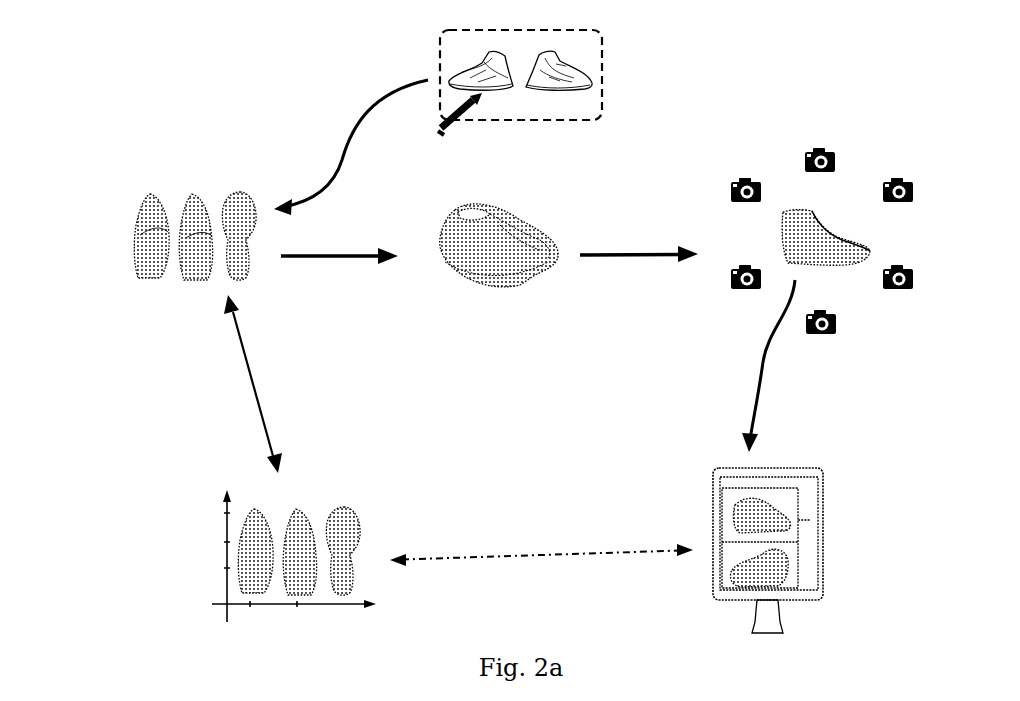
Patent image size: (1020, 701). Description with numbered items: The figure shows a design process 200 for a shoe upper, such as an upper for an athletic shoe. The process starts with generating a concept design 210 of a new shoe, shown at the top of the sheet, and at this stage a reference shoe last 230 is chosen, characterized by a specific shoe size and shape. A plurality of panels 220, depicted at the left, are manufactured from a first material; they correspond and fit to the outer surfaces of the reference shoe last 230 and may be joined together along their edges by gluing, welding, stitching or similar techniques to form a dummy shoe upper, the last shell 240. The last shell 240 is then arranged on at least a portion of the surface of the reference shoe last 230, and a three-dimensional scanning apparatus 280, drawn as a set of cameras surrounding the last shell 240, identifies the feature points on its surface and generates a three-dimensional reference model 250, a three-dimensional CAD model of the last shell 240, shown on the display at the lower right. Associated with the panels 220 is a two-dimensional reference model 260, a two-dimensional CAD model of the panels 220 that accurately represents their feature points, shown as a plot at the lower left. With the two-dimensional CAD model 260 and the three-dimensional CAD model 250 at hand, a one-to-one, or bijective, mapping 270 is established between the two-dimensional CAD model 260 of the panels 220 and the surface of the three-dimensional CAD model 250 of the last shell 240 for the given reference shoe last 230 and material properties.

The design process 200 is at (499, 246).
The concept design 210 is at (518, 69).
The panels 220 is at (156, 252).
The reference shoe last 230 is at (522, 239).
The last shell 240 is at (835, 257).
The 3D reference model 250 is at (761, 521).
The 2D reference model 260 is at (249, 561).
The mapping 270 is at (541, 571).
The 3D scanning apparatus 280 is at (805, 153).